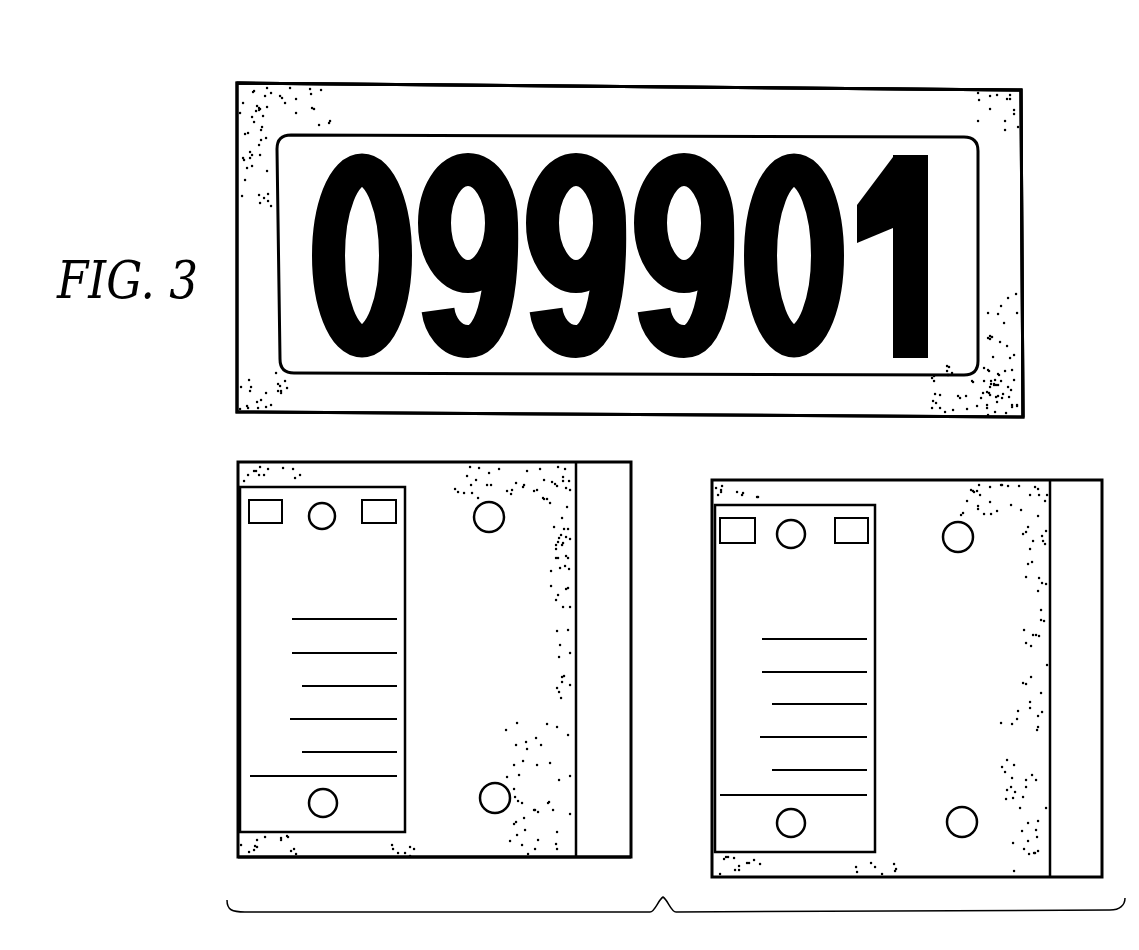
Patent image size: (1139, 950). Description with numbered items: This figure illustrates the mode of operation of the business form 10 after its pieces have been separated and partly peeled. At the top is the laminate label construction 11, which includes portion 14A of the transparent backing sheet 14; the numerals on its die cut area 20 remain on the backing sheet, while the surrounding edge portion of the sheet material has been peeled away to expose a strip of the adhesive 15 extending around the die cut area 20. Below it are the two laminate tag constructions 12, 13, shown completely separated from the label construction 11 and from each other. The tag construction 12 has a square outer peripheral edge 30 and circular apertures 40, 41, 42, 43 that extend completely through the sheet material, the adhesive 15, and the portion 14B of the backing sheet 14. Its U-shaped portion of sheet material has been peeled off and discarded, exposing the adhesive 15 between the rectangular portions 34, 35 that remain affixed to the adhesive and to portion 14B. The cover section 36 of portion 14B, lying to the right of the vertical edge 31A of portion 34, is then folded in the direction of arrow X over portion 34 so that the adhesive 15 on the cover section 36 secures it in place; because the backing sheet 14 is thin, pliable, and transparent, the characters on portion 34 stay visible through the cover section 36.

The business form 10 is at (521, 156).
The laminate label construction 11 is at (710, 73).
The laminate tag construction 12 is at (362, 869).
The laminate tag construction 13 is at (1100, 458).
The transparent backing sheet 14 is at (237, 208).
The portion of backing sheet 14A is at (1007, 90).
The portion of backing sheet 14B is at (470, 860).
The layer of adhesive 15 is at (331, 97).
The die cut area 20 is at (872, 153).
The square outer peripheral edge 30 is at (550, 858).
The vertical edge 31A is at (410, 677).
The rectangular portion of layer 16 34 is at (390, 612).
The rectangular portion of layer 16 35 is at (632, 676).
The cover section 36 is at (418, 488).
The circular aperture 40 is at (333, 508).
The circular aperture 41 is at (309, 806).
The circular aperture 42 is at (500, 528).
The circular aperture 43 is at (488, 812).
The arrow indicating folding direction X is at (619, 458).